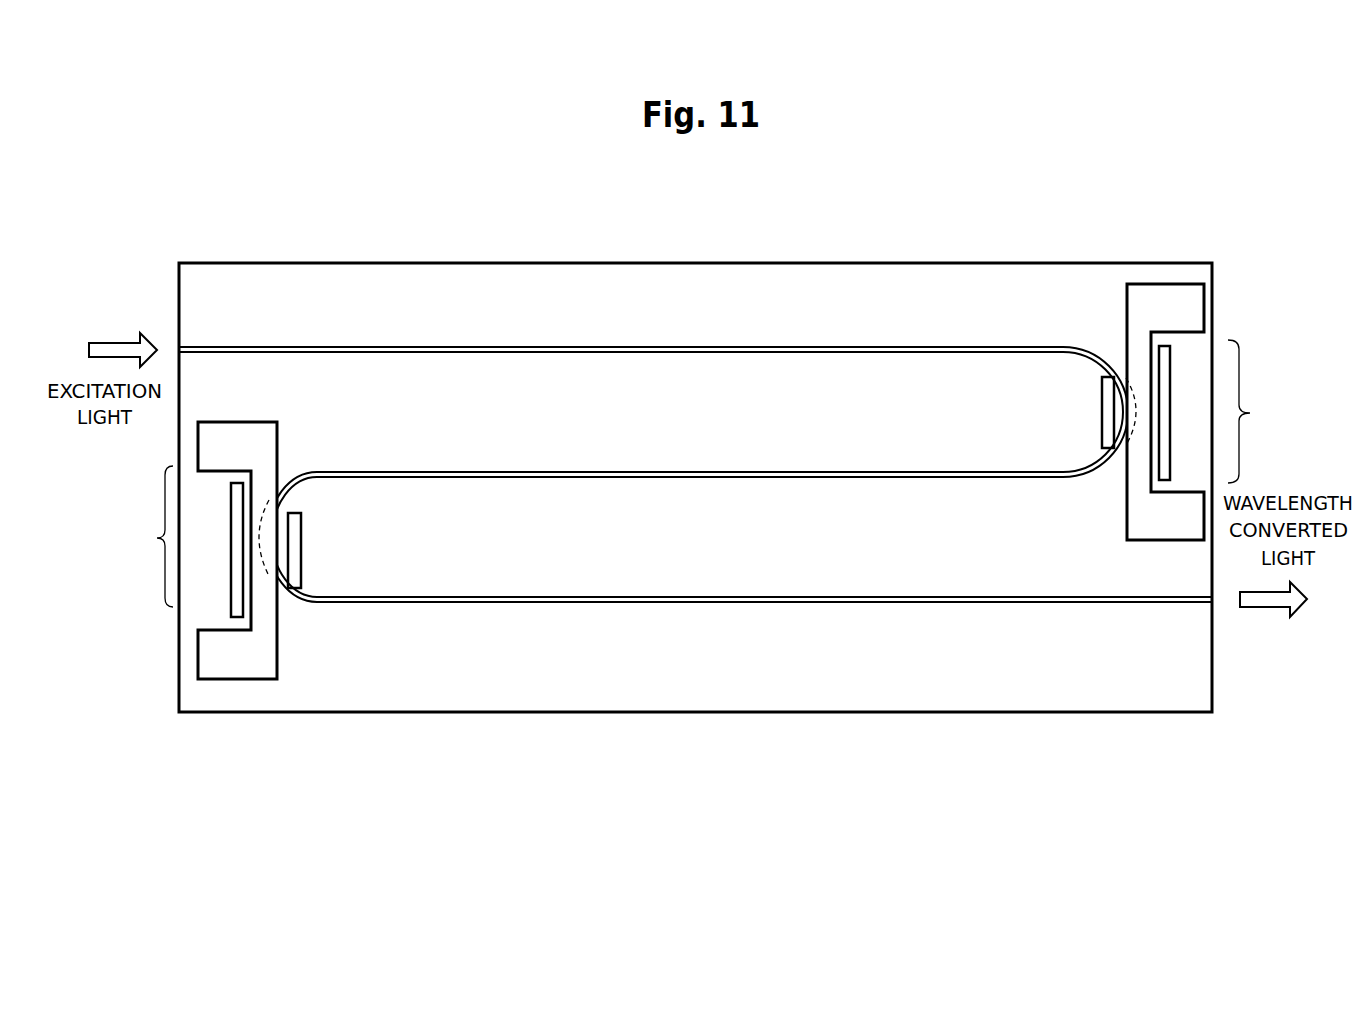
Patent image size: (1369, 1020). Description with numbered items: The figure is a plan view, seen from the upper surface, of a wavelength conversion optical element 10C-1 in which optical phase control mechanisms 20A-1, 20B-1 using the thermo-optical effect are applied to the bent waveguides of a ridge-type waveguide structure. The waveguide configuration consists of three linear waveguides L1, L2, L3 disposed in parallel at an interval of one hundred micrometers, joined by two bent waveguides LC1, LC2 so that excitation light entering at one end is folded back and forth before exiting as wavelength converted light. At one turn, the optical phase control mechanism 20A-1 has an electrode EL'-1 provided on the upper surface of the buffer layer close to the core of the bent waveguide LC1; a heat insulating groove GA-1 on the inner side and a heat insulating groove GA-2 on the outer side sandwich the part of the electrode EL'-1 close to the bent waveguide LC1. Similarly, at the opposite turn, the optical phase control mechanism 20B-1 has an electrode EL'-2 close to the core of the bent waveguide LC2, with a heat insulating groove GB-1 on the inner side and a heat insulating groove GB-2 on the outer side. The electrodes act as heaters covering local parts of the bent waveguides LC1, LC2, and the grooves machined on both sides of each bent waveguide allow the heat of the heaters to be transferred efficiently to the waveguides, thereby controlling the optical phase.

The wavelength conversion optical element 10C-1 is at (698, 263).
The optical phase control mechanism 20A-1 is at (1106, 336).
The optical phase control mechanism 20B-1 is at (289, 633).
The linear waveguide L1 is at (604, 347).
The linear waveguide L2 is at (622, 471).
The linear waveguide L3 is at (609, 597).
The heat insulating groove GA-1 is at (1100, 410).
The heat insulating groove GA-2 is at (1170, 360).
The heat insulating groove GB-1 is at (302, 533).
The heat insulating groove GB-2 is at (227, 582).
The electrode EL'-1 is at (1218, 410).
The electrode EL'-2 is at (173, 562).
The bent waveguide LC1 is at (1262, 411).
The bent waveguide LC2 is at (157, 538).